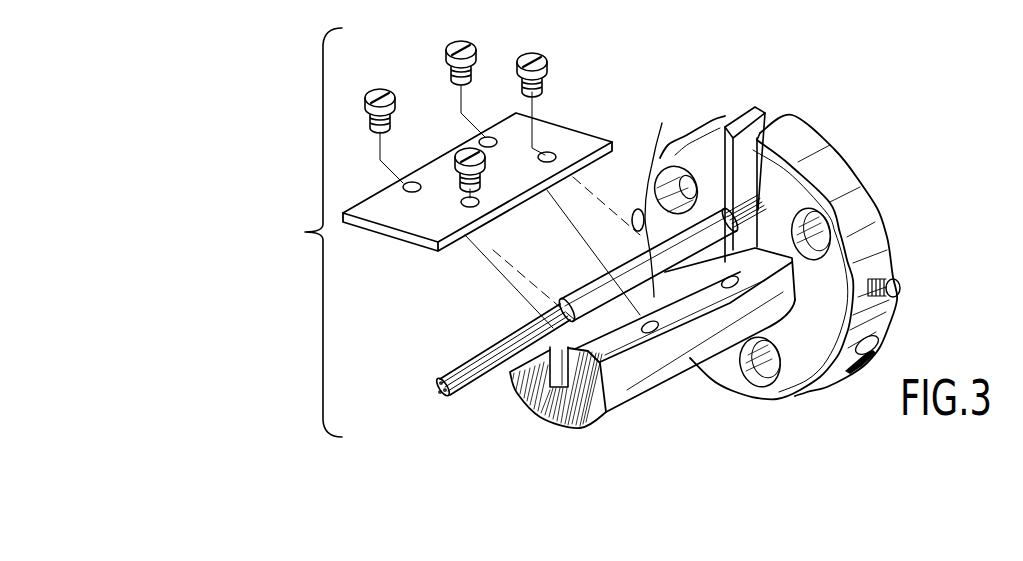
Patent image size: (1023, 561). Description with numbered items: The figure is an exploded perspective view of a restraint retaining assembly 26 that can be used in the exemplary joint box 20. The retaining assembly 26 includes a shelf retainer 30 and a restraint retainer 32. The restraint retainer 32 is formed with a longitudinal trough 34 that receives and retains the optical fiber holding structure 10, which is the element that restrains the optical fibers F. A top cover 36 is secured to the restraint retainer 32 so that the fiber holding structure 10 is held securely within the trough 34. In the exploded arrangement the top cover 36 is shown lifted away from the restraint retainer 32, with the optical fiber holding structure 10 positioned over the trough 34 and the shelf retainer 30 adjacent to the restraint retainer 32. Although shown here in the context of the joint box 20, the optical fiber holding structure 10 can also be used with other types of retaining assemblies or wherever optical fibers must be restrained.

The joint box 20 is at (345, 218).
The restraint retaining assembly 26 is at (640, 105).
The shelf retainer 30 is at (853, 162).
The restraint retainer 32 is at (660, 388).
The longitudinal trough 34 is at (647, 232).
The top cover 36 is at (410, 247).
The optical fiber holding structure 10 is at (597, 283).
The fiber optic cable F is at (463, 393).